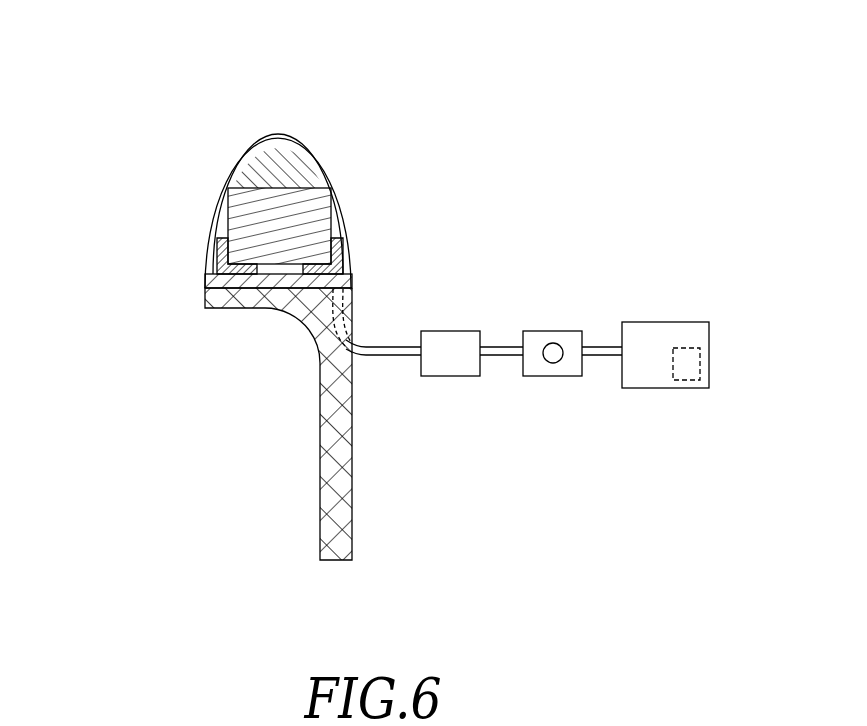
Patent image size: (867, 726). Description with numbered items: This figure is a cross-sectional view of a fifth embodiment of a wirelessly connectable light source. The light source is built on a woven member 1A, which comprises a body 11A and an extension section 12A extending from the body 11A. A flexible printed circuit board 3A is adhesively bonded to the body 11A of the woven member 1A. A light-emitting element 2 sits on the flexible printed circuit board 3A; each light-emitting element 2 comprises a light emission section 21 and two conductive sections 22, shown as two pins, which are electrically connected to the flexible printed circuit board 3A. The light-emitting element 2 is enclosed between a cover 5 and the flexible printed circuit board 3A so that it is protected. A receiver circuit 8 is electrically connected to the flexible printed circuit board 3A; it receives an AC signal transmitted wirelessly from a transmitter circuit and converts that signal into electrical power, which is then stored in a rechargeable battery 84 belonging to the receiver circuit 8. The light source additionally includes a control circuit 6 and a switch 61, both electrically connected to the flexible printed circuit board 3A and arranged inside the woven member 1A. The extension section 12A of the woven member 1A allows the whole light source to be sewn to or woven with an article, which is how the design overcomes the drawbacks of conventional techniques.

The woven member 1A is at (326, 424).
The body 11A is at (243, 309).
The extension section 12A is at (345, 477).
The light-emitting element 2 is at (243, 160).
The light emission section 21 is at (278, 152).
The conductive section 22 is at (217, 257).
The flexible printed circuit board 3A is at (352, 280).
The cover 5 is at (344, 197).
The control circuit 6 is at (450, 362).
The switch 61 is at (553, 353).
The receiver circuit 8 is at (694, 328).
The rechargeable battery 84 is at (692, 363).